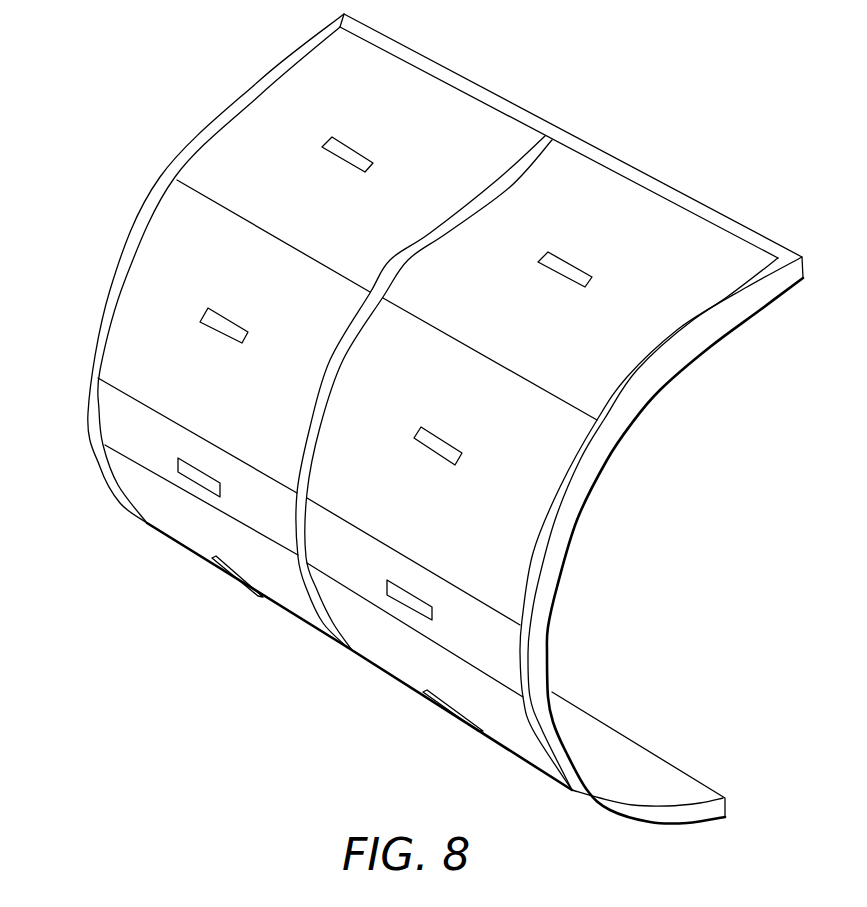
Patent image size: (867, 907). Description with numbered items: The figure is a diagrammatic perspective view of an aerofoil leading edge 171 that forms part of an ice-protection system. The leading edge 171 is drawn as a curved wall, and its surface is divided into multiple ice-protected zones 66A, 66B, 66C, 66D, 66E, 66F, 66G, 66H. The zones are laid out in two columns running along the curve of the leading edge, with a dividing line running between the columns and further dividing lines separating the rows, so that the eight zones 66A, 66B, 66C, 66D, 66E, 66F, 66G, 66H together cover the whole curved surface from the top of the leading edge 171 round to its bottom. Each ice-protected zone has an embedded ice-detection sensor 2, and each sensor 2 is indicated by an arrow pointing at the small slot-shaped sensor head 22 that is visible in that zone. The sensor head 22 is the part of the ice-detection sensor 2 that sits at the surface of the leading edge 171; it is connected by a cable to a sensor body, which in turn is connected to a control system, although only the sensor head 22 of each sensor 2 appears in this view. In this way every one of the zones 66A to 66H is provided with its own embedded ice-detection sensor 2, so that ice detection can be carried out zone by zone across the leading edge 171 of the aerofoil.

The aerofoil leading edge 171 is at (124, 230).
The ice-protected zone 66A is at (420, 85).
The ice-protected zone 66B is at (692, 227).
The ice-protected zone 66C is at (120, 308).
The ice-protected zone 66D is at (552, 470).
The ice-protected zone 66E is at (110, 412).
The ice-protected zone 66F is at (512, 652).
The ice-protected zone 66G is at (167, 525).
The ice-protected zone 66H is at (520, 750).
The ice-detection sensor 2 is at (357, 131).
The sensor head 22 is at (347, 165).